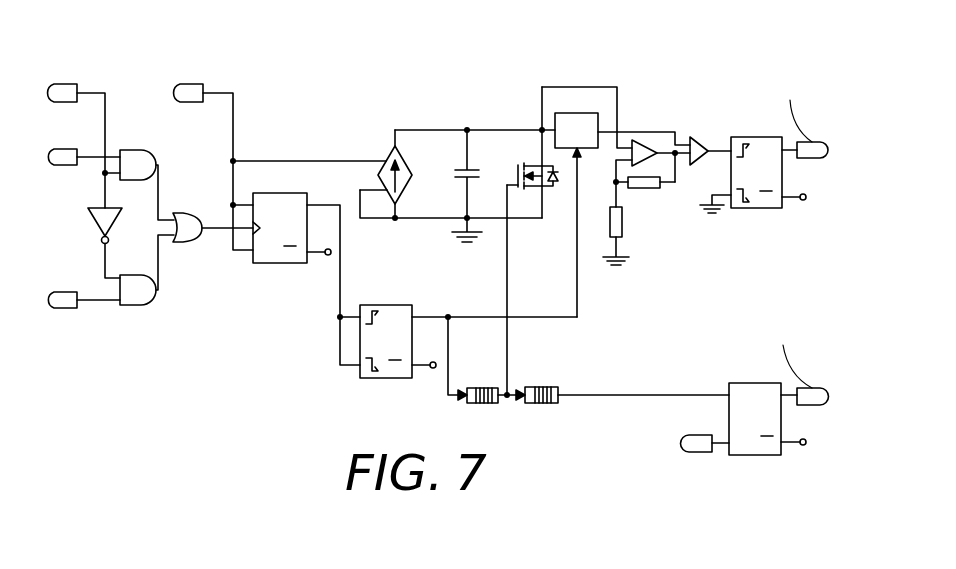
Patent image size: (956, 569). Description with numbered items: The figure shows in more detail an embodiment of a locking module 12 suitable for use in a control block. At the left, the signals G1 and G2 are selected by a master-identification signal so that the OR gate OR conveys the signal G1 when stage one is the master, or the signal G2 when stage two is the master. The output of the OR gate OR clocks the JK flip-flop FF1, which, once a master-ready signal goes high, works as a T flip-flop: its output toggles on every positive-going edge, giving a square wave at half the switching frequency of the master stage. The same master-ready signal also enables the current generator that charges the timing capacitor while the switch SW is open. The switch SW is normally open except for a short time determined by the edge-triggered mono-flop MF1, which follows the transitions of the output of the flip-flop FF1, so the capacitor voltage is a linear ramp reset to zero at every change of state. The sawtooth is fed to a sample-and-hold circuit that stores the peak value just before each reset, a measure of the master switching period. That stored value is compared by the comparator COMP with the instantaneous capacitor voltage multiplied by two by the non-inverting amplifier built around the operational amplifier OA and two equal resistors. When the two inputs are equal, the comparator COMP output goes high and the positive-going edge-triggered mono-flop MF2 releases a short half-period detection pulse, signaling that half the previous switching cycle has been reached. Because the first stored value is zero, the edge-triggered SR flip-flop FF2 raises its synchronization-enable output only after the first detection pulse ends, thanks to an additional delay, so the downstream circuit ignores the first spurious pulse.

The locking module 12 is at (436, 239).
The signal G1 is at (62, 165).
The signal G2 is at (62, 308).
The OR gate OR is at (187, 216).
The JK flip-flop FF1 is at (280, 218).
The edge-triggered mono-flop MF1 is at (386, 343).
The switch SW is at (538, 203).
The operational amplifier OA is at (651, 148).
The comparator COMP is at (681, 135).
The positive-going edge-triggered mono-flop MF2 is at (756, 173).
The edge-triggered SR flip-flop FF2 is at (755, 408).